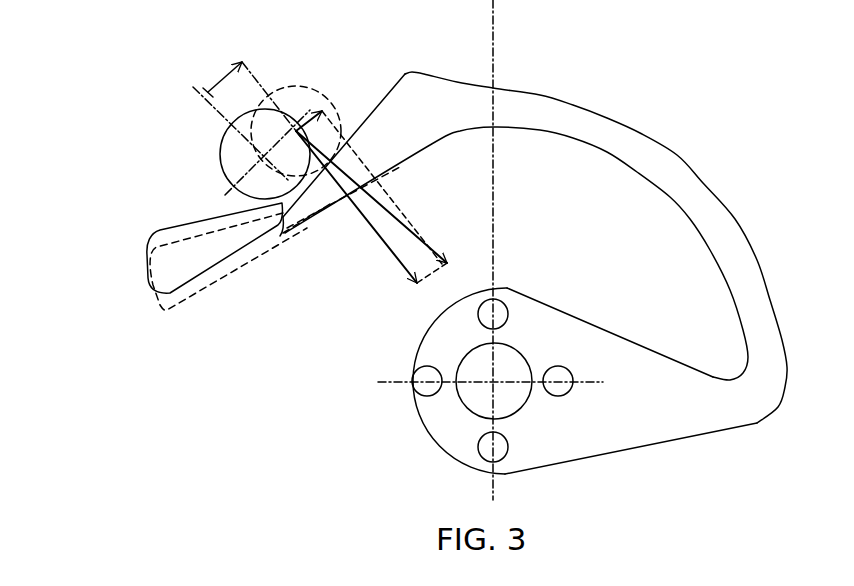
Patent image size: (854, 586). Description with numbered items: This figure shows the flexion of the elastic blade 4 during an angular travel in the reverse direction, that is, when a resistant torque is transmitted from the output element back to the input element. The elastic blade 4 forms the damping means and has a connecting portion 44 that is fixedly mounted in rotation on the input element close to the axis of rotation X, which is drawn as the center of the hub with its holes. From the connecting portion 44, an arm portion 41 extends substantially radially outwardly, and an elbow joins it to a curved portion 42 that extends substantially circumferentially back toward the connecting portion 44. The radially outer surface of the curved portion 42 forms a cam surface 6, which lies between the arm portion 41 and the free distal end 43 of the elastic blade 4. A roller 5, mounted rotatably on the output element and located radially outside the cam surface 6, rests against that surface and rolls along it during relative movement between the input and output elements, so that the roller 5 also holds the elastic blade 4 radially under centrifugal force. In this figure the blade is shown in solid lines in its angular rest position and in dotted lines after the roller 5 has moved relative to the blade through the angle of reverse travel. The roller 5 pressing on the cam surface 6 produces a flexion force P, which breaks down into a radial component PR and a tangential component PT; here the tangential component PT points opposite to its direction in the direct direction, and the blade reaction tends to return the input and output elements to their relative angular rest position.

The elastic blade 4 is at (535, 260).
The arm portion 41 is at (690, 407).
The curved portion 42 is at (663, 168).
The free distal end 43 is at (158, 266).
The connecting portion 44 is at (428, 420).
The roller 5 is at (262, 112).
The cam surface 6 is at (283, 205).
The axis of rotation X is at (495, 383).
The flexion force P is at (405, 212).
The radial component PR is at (377, 240).
The tangential component PT is at (305, 93).